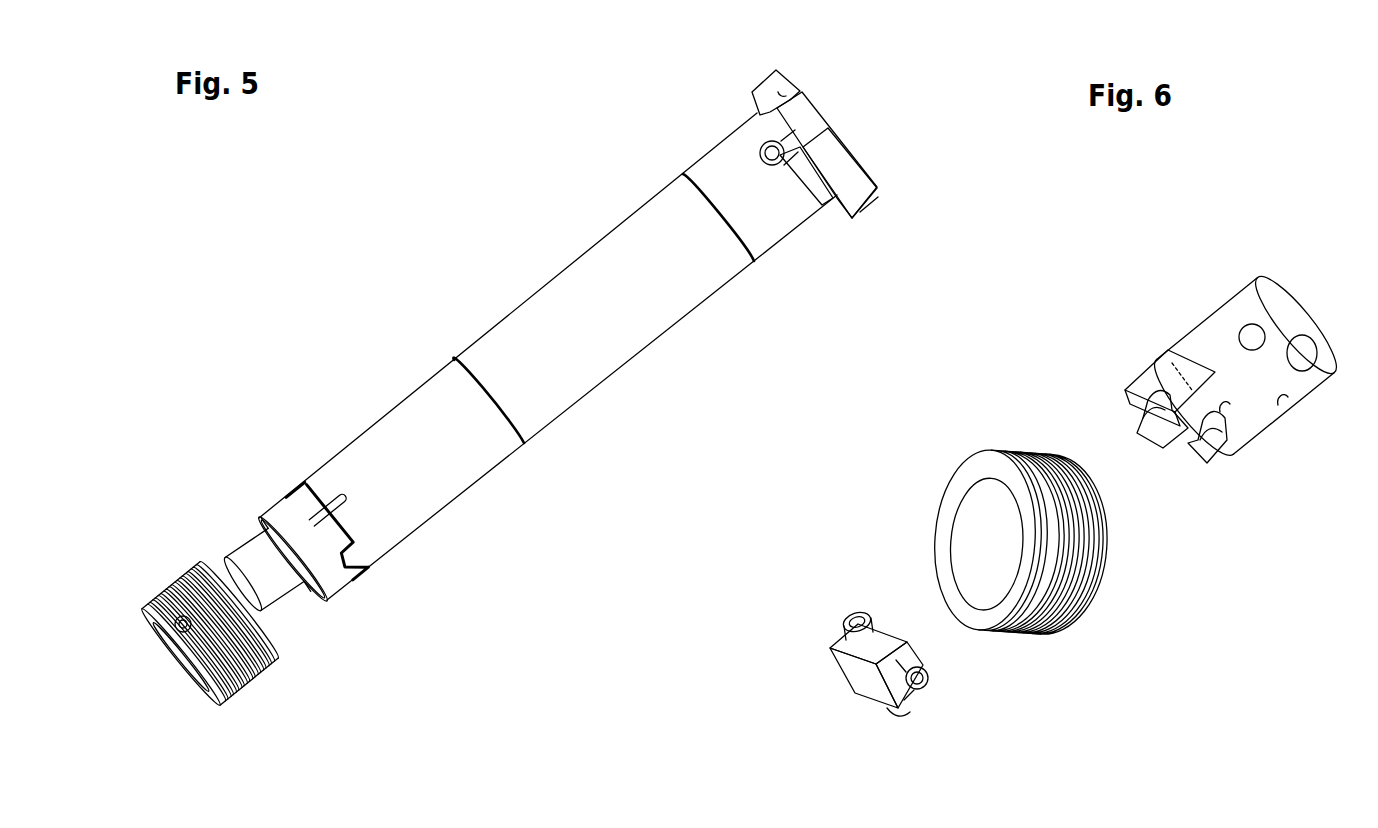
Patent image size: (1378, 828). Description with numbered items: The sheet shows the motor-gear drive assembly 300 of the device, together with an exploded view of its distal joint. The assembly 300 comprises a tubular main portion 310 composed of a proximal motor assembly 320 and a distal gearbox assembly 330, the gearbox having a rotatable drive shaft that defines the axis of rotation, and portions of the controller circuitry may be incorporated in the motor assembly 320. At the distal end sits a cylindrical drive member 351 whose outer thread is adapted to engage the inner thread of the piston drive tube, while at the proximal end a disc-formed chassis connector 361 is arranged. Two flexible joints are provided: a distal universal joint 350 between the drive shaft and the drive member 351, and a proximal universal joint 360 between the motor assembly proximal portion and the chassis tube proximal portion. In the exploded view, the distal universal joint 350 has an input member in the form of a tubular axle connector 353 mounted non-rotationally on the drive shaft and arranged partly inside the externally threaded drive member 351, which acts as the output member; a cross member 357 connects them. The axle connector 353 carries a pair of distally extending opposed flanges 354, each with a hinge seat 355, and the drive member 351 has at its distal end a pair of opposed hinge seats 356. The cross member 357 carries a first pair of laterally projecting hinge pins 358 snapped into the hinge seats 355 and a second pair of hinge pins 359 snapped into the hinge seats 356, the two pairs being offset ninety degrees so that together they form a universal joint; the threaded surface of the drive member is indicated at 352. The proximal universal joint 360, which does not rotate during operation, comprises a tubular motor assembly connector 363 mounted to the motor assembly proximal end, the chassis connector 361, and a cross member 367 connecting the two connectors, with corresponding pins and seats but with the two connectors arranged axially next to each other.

In FIG. 5, the motor-gear drive assembly 300 is at (307, 222).
In FIG. 5, the tubular main portion 310 is at (523, 305).
In FIG. 5, the proximal motor assembly 320 is at (655, 345).
In FIG. 5, the distal gearbox assembly 330 is at (468, 493).
In FIG. 5, the distal universal joint 350 is at (226, 498).
In FIG. 6, the distal universal joint 350 is at (1233, 688).
In FIG. 5, the cylindrical drive member 351 is at (207, 607).
In FIG. 6, the cylindrical drive member 351 is at (1077, 607).
In FIG. 5, the ring threads 352 is at (247, 677).
In FIG. 5, the tubular axle connector 353 is at (282, 610).
In FIG. 6, the tubular axle connector 353 is at (1255, 408).
In FIG. 6, the distally extending opposed flanges 354 is at (1162, 378).
In FIG. 6, the hinge seat 355 is at (1163, 415).
In FIG. 6, the opposed hinge seats 356 is at (985, 493).
In FIG. 5, the cross member 357 is at (165, 590).
In FIG. 6, the cross member 357 is at (865, 683).
In FIG. 6, the first pair of opposed laterally projecting hinge pins 358 is at (917, 683).
In FIG. 6, the second pair of opposed laterally projecting hinge pins 359 is at (853, 617).
In FIG. 5, the proximal universal joint 360 is at (700, 138).
In FIG. 5, the disc-formed chassis connector 361 is at (845, 153).
In FIG. 5, the tubular motor assembly connector 363 is at (765, 240).
In FIG. 5, the cross member 367 is at (777, 160).